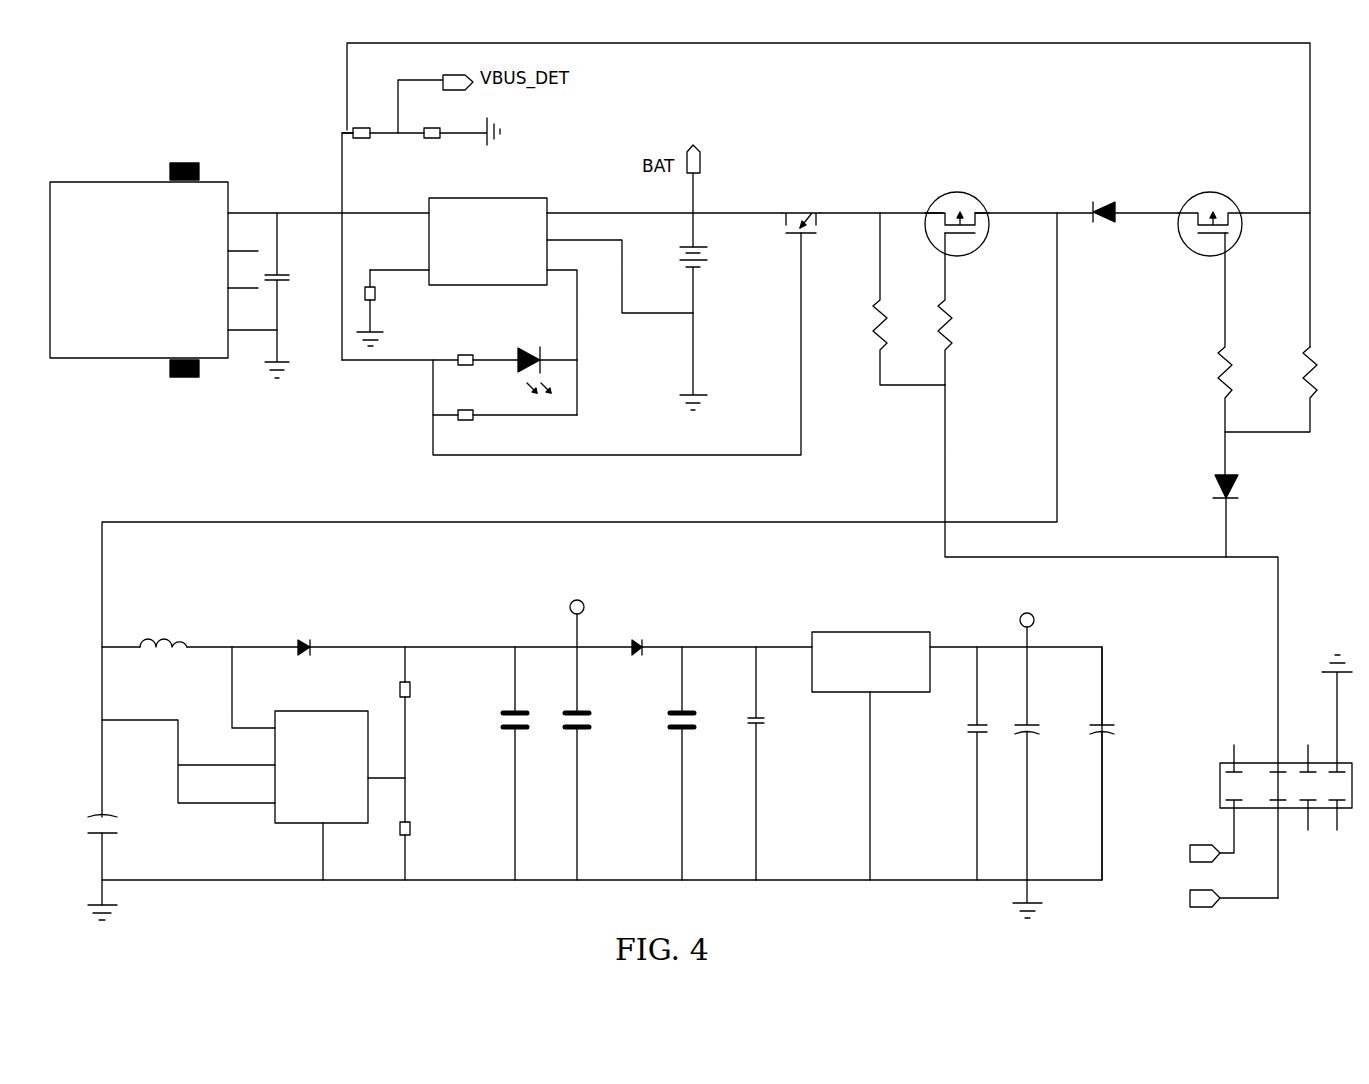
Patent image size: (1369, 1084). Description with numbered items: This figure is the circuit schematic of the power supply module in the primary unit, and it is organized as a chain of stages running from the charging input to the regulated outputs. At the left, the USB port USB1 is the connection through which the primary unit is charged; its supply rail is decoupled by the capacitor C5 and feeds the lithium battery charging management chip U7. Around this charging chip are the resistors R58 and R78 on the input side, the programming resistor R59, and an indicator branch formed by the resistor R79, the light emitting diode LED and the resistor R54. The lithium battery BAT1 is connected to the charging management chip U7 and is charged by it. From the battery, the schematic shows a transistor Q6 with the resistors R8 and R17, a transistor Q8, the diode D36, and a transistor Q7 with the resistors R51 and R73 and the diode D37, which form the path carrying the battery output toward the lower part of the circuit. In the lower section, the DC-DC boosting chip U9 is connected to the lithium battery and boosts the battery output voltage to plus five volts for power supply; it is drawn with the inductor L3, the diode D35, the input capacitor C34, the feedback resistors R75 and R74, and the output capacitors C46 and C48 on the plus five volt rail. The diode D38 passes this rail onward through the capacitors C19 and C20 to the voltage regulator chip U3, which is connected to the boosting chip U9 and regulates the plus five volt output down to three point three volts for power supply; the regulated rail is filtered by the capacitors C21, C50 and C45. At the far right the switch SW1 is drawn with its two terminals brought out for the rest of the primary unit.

The USB connector USB1 is at (163, 270).
The capacitor 100nF C5 is at (300, 295).
The resistor 470K R58 is at (383, 157).
The resistor 470K R78 is at (456, 152).
The lithium battery charging management chip U7 is at (531, 283).
The resistor 2.49K R59 is at (396, 308).
The resistor 2K R79 is at (430, 351).
The charge indicator LED is at (547, 357).
The resistor 10K R54 is at (505, 427).
The battery BAT1 is at (719, 328).
The transistor MI3401A Q6 is at (807, 227).
The resistor 100K R8 is at (885, 299).
The MOSFET Si2301DS Q8 is at (957, 205).
The resistor 1K R17 is at (965, 309).
The diode SS12 D36 is at (1111, 241).
The MOSFET Si2301DS Q7 is at (1214, 199).
The resistor 1K R51 is at (1205, 354).
The resistor 100K R73 is at (1271, 389).
The diode 1N5819 D37 is at (1264, 514).
The inductor 22uH L3 is at (173, 657).
The diode 1N5819W D35 is at (342, 636).
The capacitor 47uF C34 is at (131, 835).
The DC-DC boosting chip U9 is at (320, 794).
The resistor 30K R75 is at (374, 734).
The resistor 9.1K R74 is at (431, 849).
The capacitor 10uF C46 is at (482, 763).
The capacitor 100uF C48 is at (604, 725).
The diode 1N5819W D38 is at (681, 631).
The capacitor 47uF C19 is at (704, 763).
The capacitor 100nF C20 is at (784, 763).
The voltage regulator chip U3 is at (879, 732).
The capacitor 100nF C21 is at (945, 763).
The capacitor 100uF C50 is at (1050, 764).
The capacitor 47uF C45 is at (1125, 763).
The switch SW1 is at (1246, 781).